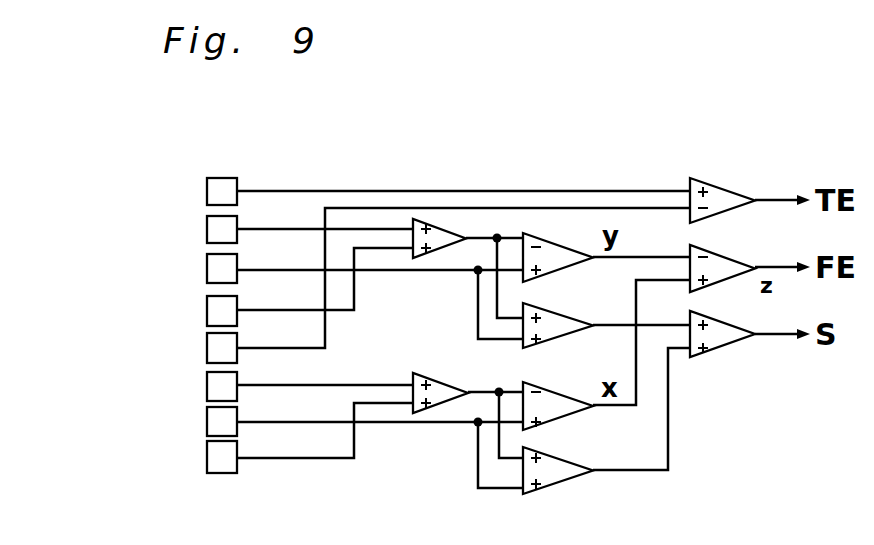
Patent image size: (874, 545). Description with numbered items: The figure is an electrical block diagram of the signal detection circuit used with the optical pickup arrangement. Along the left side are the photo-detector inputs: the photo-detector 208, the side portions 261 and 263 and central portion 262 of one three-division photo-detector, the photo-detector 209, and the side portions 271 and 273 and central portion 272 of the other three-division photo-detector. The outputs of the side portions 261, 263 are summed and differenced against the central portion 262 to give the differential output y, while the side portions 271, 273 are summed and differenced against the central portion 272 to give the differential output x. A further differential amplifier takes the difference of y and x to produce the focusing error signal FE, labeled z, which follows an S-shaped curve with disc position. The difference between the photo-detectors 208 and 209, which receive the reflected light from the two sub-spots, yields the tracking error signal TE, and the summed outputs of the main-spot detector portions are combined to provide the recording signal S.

The photo-detector 208 is at (207, 190).
The side portion of three-division photo-detector 261 is at (207, 229).
The central portion of three-division photo-detector 262 is at (207, 268).
The side portion of three-division photo-detector 263 is at (207, 310).
The photo-detector 209 is at (207, 348).
The side portion of three-division photo-detector 271 is at (207, 385).
The central portion of three-division photo-detector 272 is at (207, 421).
The side portion of three-division photo-detector 273 is at (207, 457).